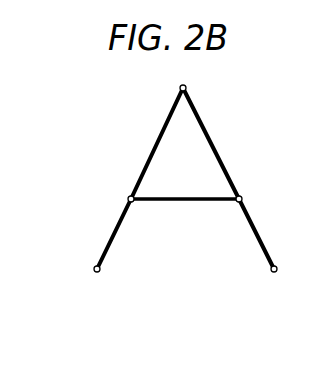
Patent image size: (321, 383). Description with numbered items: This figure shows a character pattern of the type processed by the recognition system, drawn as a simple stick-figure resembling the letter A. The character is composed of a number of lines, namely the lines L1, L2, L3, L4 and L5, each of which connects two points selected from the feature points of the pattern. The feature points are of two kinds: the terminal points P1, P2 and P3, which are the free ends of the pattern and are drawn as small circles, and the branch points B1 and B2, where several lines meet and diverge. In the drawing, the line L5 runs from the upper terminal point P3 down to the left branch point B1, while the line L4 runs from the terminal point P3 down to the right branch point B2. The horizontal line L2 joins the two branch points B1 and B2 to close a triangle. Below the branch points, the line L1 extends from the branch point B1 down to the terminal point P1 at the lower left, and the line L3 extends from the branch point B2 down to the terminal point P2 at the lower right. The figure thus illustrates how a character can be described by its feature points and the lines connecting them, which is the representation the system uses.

The line L1 is at (117, 233).
The line L2 is at (164, 198).
The line L3 is at (255, 235).
The line L4 is at (210, 132).
The line L5 is at (163, 128).
The terminal point P1 is at (95, 273).
The terminal point P2 is at (278, 273).
The terminal point P3 is at (187, 87).
The branch point B1 is at (128, 195).
The branch point B2 is at (243, 197).